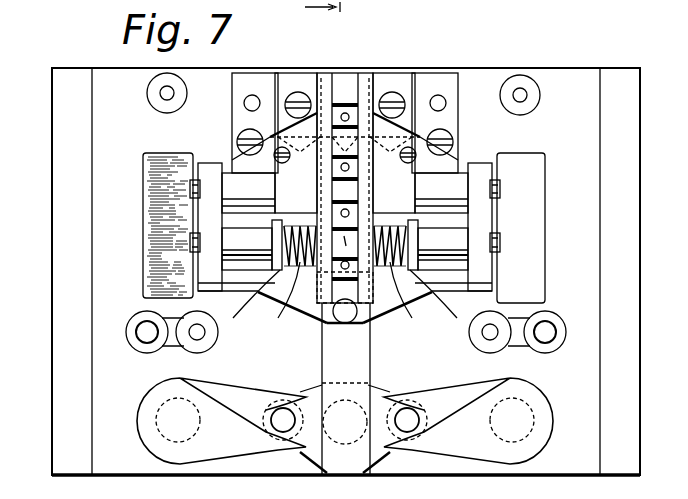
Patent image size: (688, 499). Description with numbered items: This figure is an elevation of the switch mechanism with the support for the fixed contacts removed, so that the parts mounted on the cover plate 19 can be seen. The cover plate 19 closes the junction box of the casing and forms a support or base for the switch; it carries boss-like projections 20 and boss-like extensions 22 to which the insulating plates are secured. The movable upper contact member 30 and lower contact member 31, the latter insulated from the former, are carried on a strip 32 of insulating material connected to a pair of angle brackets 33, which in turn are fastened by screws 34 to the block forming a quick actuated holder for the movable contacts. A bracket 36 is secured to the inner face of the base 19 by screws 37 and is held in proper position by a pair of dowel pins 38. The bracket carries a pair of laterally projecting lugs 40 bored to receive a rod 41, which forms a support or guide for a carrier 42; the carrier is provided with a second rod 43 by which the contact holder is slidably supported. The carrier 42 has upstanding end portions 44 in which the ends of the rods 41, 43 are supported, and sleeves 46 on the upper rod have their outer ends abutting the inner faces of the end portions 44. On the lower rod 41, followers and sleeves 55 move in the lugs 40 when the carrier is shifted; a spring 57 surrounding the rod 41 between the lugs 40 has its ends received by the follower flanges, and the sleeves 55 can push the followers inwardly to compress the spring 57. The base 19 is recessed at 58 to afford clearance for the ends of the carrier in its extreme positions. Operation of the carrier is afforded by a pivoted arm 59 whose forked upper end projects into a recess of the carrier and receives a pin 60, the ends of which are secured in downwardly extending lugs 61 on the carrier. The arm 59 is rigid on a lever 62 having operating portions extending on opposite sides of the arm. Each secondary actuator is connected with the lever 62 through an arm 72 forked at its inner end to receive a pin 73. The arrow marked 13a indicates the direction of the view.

The direction arrow 13a is at (333, 18).
The cover plate 19 is at (637, 386).
The boss-like projections 20 is at (154, 100).
The boss-like extensions 22 is at (143, 347).
The upper contact member 30 is at (347, 83).
The lower contact member 31 is at (330, 285).
The strip of insulating material 32 is at (367, 86).
The angle brackets 33 is at (290, 175).
The screws 34 is at (270, 137).
The bracket 36 is at (463, 80).
The screws 37 is at (232, 135).
The dowel pins 38 is at (256, 96).
The laterally projecting lugs 40 is at (272, 222).
The rod 41 is at (502, 248).
The carrier 42 is at (242, 283).
The second rod 43 is at (502, 186).
The upstanding end portions 44 is at (207, 208).
The sleeves 46 is at (345, 193).
The sleeves 55 is at (345, 249).
The spring 57 is at (247, 300).
The recess 58 is at (538, 165).
The pivoted arm 59 is at (366, 368).
The pin 60 is at (362, 318).
The downwardly extending lugs 61 is at (335, 322).
The lever 62 is at (298, 452).
The arm 72 is at (220, 388).
The pin 73 is at (285, 408).